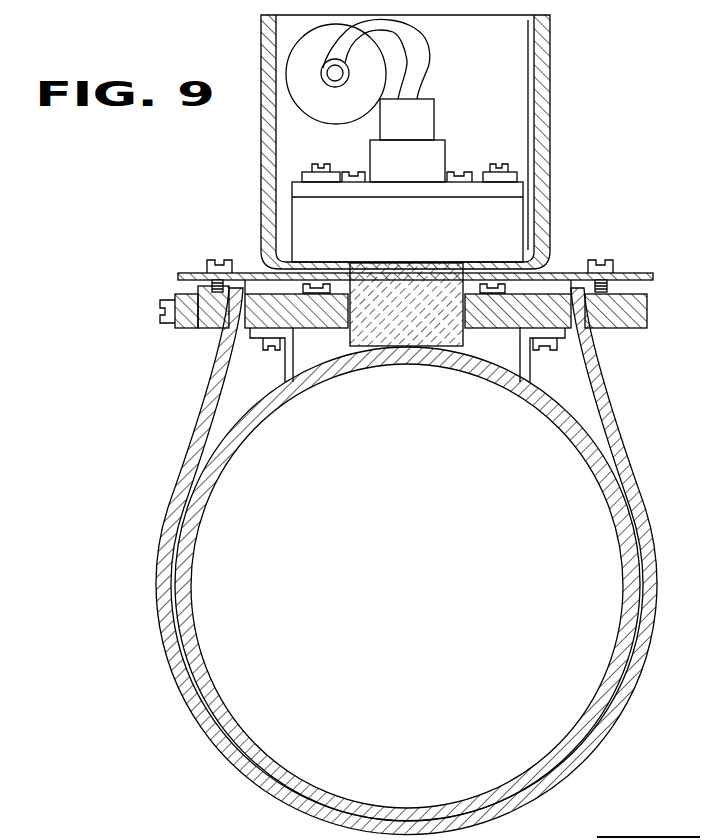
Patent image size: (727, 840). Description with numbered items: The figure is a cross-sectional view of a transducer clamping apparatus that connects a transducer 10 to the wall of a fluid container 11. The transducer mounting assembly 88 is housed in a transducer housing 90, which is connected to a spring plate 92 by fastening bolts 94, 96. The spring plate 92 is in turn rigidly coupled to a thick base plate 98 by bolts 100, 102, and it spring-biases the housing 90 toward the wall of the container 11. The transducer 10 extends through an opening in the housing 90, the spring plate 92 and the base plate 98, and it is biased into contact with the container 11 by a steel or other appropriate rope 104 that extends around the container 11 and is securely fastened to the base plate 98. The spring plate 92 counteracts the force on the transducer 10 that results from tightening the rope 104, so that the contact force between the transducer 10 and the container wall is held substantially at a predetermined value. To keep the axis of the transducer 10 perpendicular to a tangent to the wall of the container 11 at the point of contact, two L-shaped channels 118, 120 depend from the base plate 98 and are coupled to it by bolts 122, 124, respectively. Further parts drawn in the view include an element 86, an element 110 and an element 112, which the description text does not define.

The transducer 10 is at (405, 295).
The container 11 is at (575, 425).
The transmitter housing 86 is at (245, 182).
The transducer mounting assembly 88 is at (426, 230).
The transducer housing 90 is at (551, 97).
The spring plate 92 is at (560, 273).
The fastening bolt 94 is at (330, 276).
The fastening bolt 96 is at (494, 276).
The base plate 98 is at (190, 326).
The bolt 100 is at (221, 243).
The bolt 102 is at (615, 264).
The rope 104 is at (156, 580).
The screw 110 is at (158, 312).
The clamp member 112 is at (600, 330).
The L-shaped channel 118 is at (293, 350).
The L-shaped channel 120 is at (522, 342).
The bolt 122 is at (285, 345).
The bolt 124 is at (545, 350).